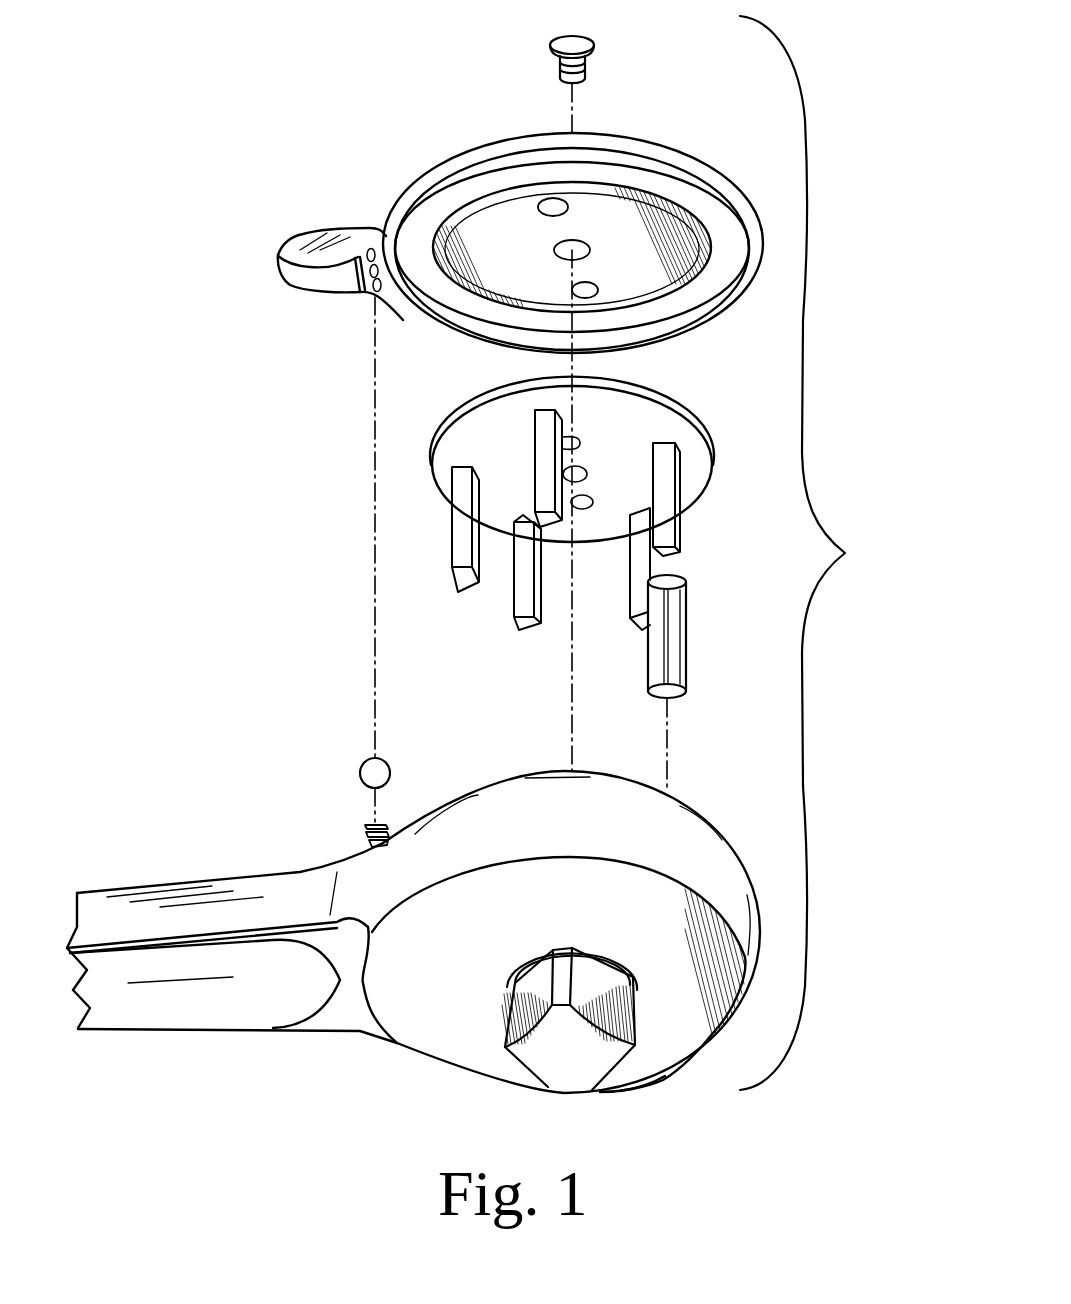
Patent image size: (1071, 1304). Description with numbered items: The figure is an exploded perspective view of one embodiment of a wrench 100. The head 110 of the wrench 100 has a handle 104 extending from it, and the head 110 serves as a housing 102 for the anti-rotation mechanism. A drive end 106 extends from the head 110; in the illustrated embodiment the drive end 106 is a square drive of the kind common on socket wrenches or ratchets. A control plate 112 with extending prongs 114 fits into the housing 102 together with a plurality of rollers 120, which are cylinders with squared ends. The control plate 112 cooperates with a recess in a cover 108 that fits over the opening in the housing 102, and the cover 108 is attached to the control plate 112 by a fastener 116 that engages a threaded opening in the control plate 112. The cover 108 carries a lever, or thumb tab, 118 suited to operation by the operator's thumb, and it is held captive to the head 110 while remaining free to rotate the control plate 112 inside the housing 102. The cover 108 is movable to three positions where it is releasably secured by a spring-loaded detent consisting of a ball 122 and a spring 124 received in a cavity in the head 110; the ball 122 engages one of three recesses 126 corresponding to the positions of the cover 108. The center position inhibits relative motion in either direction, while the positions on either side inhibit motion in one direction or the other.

The wrench 100 is at (845, 553).
The housing 102 is at (487, 783).
The handle 104 is at (185, 883).
The drive end 106 is at (503, 1043).
The cover 108 is at (490, 145).
The head 110 is at (683, 1070).
The control plate 112 is at (433, 468).
The prongs 114 is at (680, 533).
The fastener 116 is at (548, 52).
The lever 118 is at (278, 270).
The rollers 120 is at (687, 647).
The ball 122 is at (360, 778).
The spring 124 is at (365, 846).
The recesses 126 is at (370, 295).